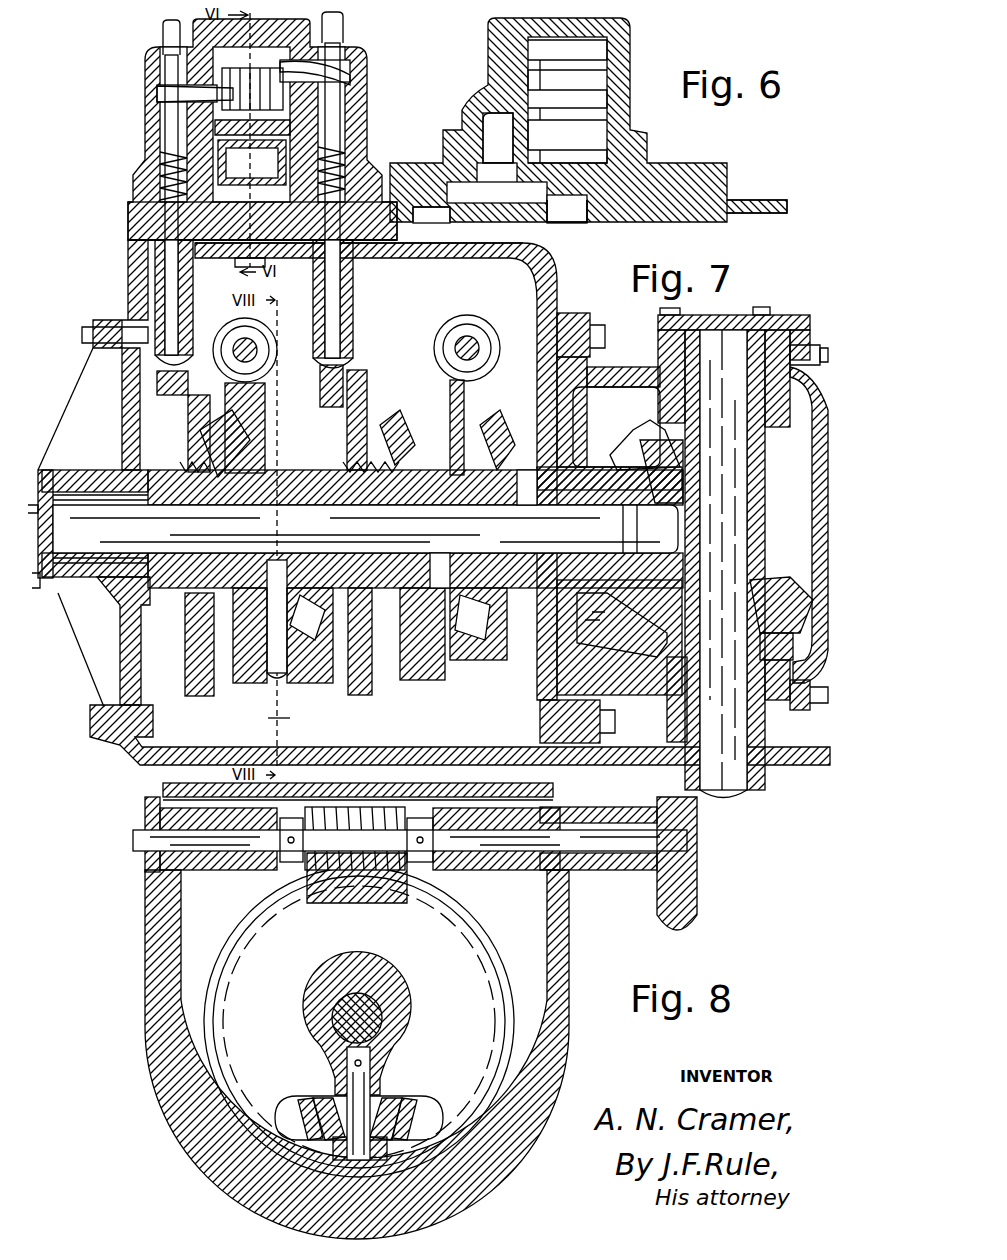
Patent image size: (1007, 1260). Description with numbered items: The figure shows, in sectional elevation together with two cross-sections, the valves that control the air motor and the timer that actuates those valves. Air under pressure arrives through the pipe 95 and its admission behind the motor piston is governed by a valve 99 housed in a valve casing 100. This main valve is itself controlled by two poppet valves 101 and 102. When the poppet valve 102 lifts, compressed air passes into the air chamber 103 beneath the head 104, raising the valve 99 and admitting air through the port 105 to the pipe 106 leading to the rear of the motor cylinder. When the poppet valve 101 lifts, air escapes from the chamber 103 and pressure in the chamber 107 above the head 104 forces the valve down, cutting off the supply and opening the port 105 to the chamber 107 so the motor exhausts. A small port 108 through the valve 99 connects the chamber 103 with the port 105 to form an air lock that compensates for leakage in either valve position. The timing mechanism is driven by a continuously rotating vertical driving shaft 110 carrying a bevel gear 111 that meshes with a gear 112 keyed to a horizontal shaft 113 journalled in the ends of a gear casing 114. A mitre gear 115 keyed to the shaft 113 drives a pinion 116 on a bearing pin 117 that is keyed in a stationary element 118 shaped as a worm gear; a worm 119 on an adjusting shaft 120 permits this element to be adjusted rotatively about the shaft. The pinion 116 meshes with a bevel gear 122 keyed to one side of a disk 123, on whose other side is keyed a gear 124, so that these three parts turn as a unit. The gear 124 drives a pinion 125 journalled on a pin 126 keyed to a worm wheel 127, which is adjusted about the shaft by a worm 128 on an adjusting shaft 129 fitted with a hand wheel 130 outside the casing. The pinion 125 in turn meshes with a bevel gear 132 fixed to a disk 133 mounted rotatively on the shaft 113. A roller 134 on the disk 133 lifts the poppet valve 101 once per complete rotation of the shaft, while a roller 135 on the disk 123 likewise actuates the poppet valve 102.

In FIG. 7, the pipe 95 is at (348, 33).
In FIG. 7, the valve 99 is at (218, 100).
In FIG. 7, the valve casing 100 is at (365, 120).
In FIG. 6, the valve casing 100 is at (628, 48).
In FIG. 7, the poppet valve 101 is at (170, 215).
In FIG. 7, the poppet valve 102 is at (385, 238).
In FIG. 7, the air chamber 103 is at (240, 268).
In FIG. 6, the air chamber 103 is at (580, 180).
In FIG. 7, the head 104 is at (232, 150).
In FIG. 7, the port 105 is at (157, 94).
In FIG. 6, the port 105 is at (537, 80).
In FIG. 7, the pipe 106 is at (162, 30).
In FIG. 7, the chamber 107 is at (215, 127).
In FIG. 6, the chamber 107 is at (495, 133).
In FIG. 7, the port 108 is at (345, 135).
In FIG. 7, the driving shaft 110 is at (750, 788).
In FIG. 7, the bevel gear 111 is at (640, 622).
In FIG. 7, the gear 112 is at (640, 435).
In FIG. 7, the horizontal shaft 113 is at (85, 598).
In FIG. 8, the horizontal shaft 113 is at (375, 1020).
In FIG. 7, the gear casing 114 is at (525, 260).
In FIG. 6, the gear casing 114 is at (735, 212).
In FIG. 8, the gear casing 114 is at (555, 935).
In FIG. 7, the mitre gear 115 is at (500, 418).
In FIG. 7, the pinion 116 is at (400, 645).
In FIG. 7, the bearing pin 117 is at (435, 665).
In FIG. 7, the stationary element 118 is at (449, 392).
In FIG. 7, the worm 119 is at (455, 340).
In FIG. 7, the adjusting shaft 120 is at (478, 340).
In FIG. 7, the bevel gear 122 is at (405, 425).
In FIG. 7, the disk 123 is at (360, 372).
In FIG. 7, the gear 124 is at (330, 466).
In FIG. 7, the pinion 125 is at (305, 650).
In FIG. 8, the pinion 125 is at (315, 1097).
In FIG. 7, the pin 126 is at (270, 675).
In FIG. 8, the pin 126 is at (372, 1078).
In FIG. 7, the worm wheel 127 is at (268, 378).
In FIG. 8, the worm wheel 127 is at (262, 912).
In FIG. 7, the worm 128 is at (262, 340).
In FIG. 8, the worm 128 is at (405, 800).
In FIG. 7, the adjusting shaft 129 is at (235, 345).
In FIG. 8, the adjusting shaft 129 is at (510, 847).
In FIG. 8, the hand wheel 130 is at (700, 912).
In FIG. 7, the bevel gear 132 is at (235, 430).
In FIG. 7, the disk 133 is at (190, 696).
In FIG. 7, the roller 134 is at (180, 421).
In FIG. 7, the roller 135 is at (311, 398).